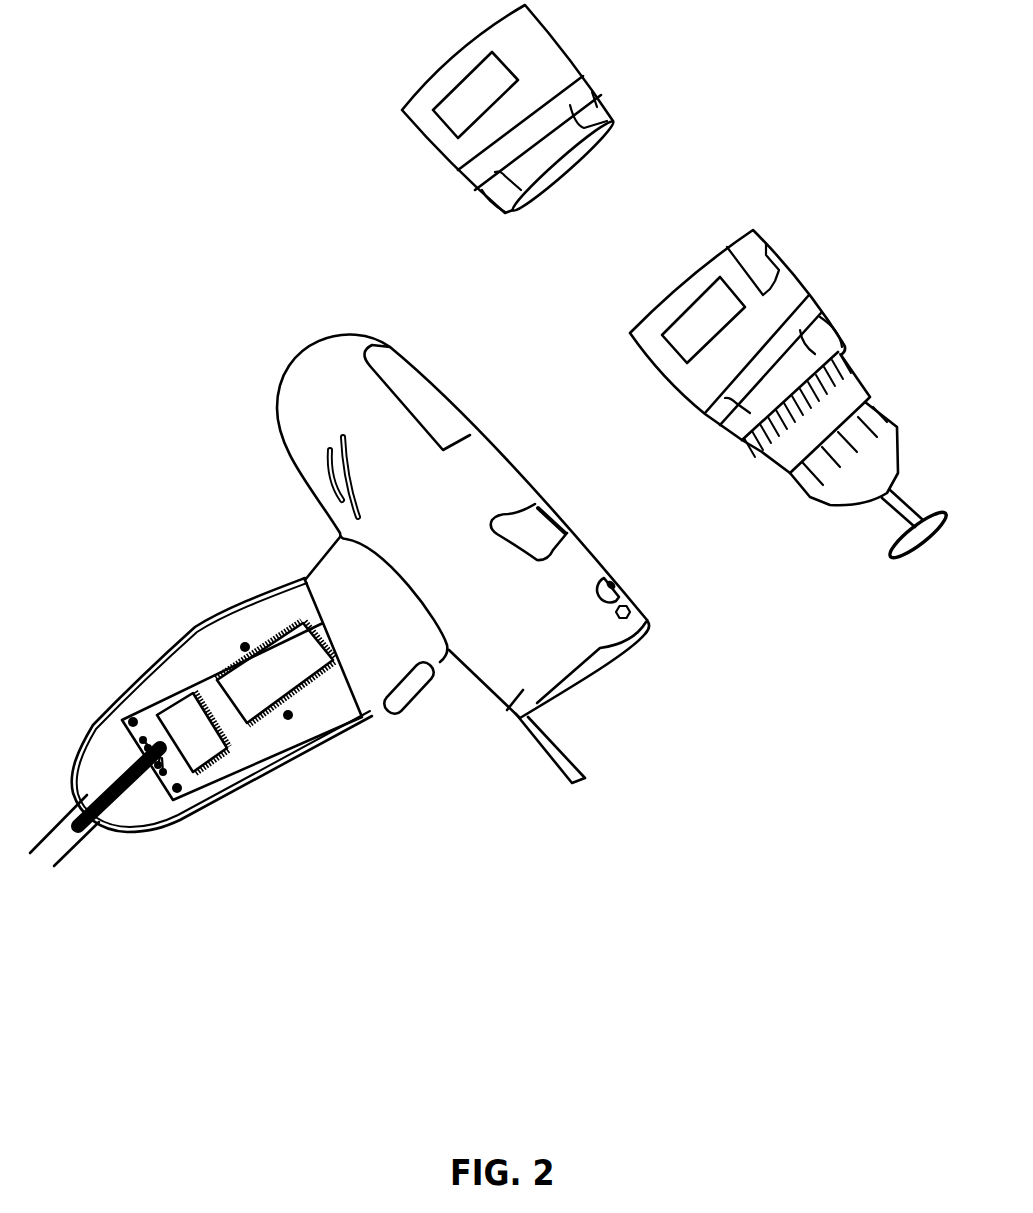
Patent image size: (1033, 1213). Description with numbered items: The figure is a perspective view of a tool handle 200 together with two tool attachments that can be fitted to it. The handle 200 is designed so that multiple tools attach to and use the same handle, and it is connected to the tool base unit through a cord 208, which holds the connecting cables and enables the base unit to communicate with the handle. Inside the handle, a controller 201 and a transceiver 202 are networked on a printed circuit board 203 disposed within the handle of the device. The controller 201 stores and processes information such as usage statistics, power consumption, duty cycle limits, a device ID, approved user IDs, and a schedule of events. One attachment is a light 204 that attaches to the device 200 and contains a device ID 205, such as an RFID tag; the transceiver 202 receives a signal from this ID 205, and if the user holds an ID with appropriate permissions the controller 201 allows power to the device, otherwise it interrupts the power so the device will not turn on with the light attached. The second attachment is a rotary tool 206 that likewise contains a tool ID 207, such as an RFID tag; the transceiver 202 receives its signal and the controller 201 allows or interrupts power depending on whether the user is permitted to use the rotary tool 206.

The tool handle 200 is at (333, 528).
The controller 201 is at (287, 656).
The transceiver 202 is at (206, 754).
The printed circuit board 203 is at (201, 684).
The light 204 is at (403, 120).
The device ID 205 is at (468, 92).
The rotary tool 206 is at (770, 235).
The tool ID 207 is at (690, 326).
The cord 208 is at (72, 856).